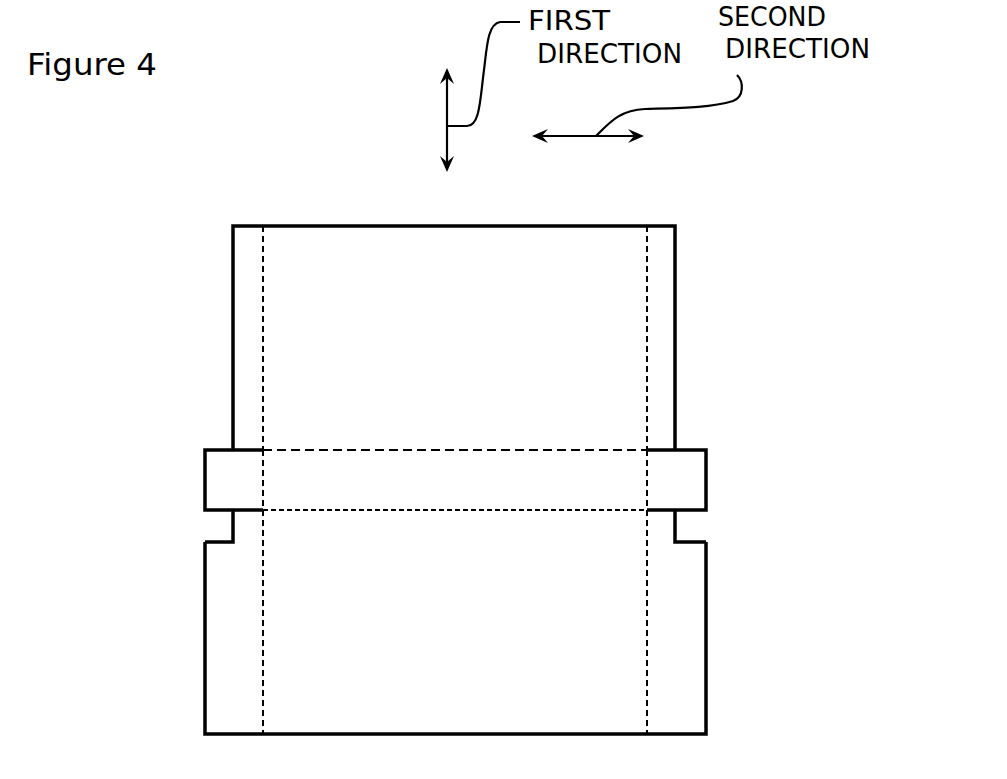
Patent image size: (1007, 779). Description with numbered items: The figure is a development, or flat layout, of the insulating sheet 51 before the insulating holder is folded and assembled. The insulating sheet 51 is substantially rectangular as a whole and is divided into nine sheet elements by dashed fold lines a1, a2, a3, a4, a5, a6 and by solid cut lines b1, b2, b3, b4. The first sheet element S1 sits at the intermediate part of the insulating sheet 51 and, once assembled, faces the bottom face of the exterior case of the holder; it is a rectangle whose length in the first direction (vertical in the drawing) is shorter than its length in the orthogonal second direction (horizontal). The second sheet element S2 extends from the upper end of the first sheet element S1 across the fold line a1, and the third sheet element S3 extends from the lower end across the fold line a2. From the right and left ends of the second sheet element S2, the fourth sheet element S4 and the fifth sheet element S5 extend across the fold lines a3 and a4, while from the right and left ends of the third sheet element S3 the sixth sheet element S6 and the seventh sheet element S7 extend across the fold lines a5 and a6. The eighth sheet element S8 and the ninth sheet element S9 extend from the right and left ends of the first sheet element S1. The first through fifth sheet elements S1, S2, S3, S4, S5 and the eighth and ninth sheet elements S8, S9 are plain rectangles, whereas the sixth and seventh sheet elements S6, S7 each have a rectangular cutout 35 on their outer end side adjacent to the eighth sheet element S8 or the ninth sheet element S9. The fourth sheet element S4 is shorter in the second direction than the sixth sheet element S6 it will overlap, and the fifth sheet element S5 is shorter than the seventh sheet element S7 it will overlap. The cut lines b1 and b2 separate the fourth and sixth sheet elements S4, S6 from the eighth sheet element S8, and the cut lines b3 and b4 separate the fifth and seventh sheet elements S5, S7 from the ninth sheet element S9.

The insulating sheet 51 is at (710, 226).
The cutout 35 is at (238, 517).
The first sheet element S1 is at (457, 492).
The second sheet element S2 is at (455, 338).
The third sheet element S3 is at (455, 622).
The fourth sheet element S4 is at (668, 338).
The fifth sheet element S5 is at (246, 338).
The sixth sheet element S6 is at (647, 622).
The seventh sheet element S7 is at (267, 622).
The eighth sheet element S8 is at (693, 466).
The ninth sheet element S9 is at (222, 482).
The fold line a1 is at (427, 448).
The fold line a2 is at (413, 515).
The fold line a3 is at (645, 340).
The fold line a4 is at (267, 276).
The fold line a5 is at (645, 582).
The fold line a6 is at (267, 582).
The cut line b1 is at (658, 455).
The cut line b2 is at (660, 518).
The cut line b3 is at (247, 448).
The cut line b4 is at (248, 516).